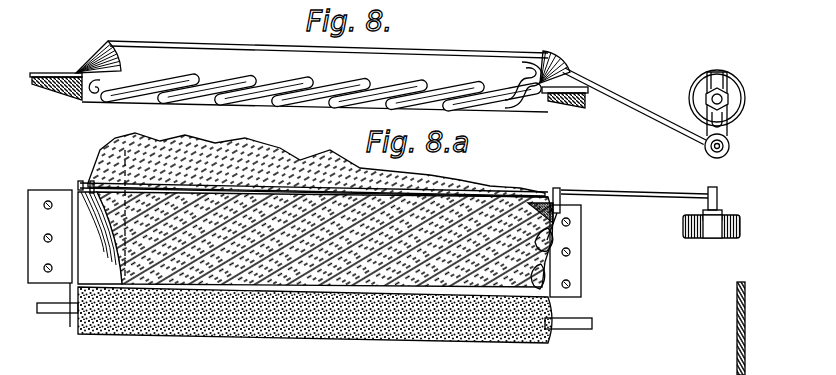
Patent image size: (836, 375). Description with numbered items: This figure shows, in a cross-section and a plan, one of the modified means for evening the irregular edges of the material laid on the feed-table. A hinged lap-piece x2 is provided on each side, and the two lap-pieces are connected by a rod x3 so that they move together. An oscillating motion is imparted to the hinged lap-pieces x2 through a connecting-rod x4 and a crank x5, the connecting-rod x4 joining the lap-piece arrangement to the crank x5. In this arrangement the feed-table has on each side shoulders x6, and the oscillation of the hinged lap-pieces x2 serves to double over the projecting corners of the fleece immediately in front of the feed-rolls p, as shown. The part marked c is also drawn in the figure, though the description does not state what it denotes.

In FIG. 8, the hinged lap-piece x2 is at (328, 59).
In FIG. 8A, the hinged lap-piece x2 is at (122, 258).
In FIG. 8, the rod x3 is at (328, 44).
In FIG. 8A, the rod x3 is at (319, 189).
In FIG. 8, the connecting-rod x4 is at (626, 105).
In FIG. 8A, the connecting-rod x4 is at (634, 185).
In FIG. 8, the crank x5 is at (727, 133).
In FIG. 8A, the crank x5 is at (718, 204).
In FIG. 8, the shoulders x6 is at (72, 91).
In FIG. 8A, the feed-rolls p is at (380, 338).
In FIG. 8A, the strip c is at (746, 346).